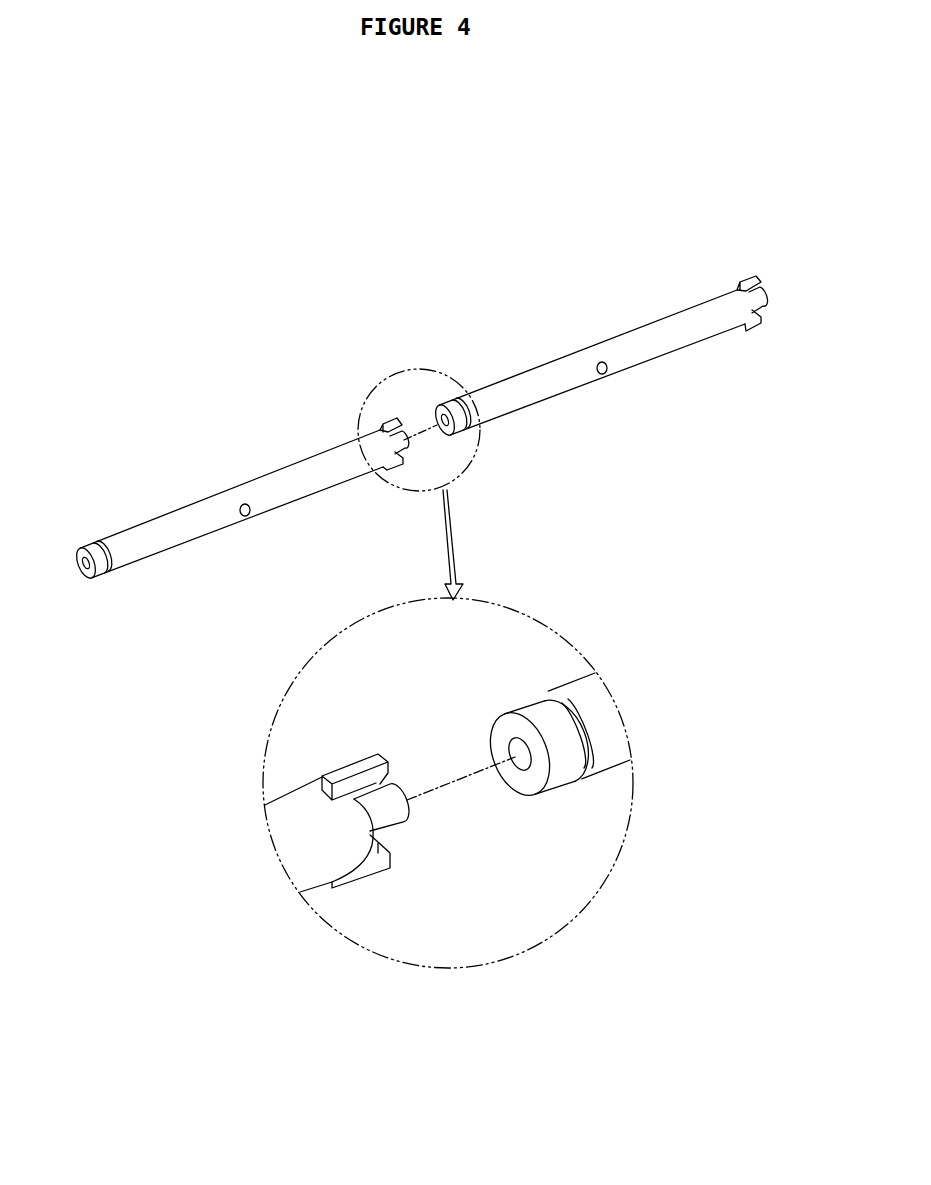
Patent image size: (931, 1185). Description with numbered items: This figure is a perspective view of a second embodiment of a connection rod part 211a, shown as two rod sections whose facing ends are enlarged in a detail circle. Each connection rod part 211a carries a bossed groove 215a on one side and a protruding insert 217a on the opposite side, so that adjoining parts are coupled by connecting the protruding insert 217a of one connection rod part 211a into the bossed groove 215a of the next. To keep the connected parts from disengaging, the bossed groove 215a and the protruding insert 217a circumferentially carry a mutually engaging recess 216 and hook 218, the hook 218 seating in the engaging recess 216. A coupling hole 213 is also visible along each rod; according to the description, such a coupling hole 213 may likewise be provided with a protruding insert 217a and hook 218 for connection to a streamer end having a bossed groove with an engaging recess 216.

The connection rod part 211a is at (178, 520).
The coupling hole 213 is at (247, 515).
The bossed groove 215a is at (523, 760).
The engaging recess 216 is at (557, 705).
The protruding insert 217a is at (398, 800).
The hook 218 is at (360, 770).